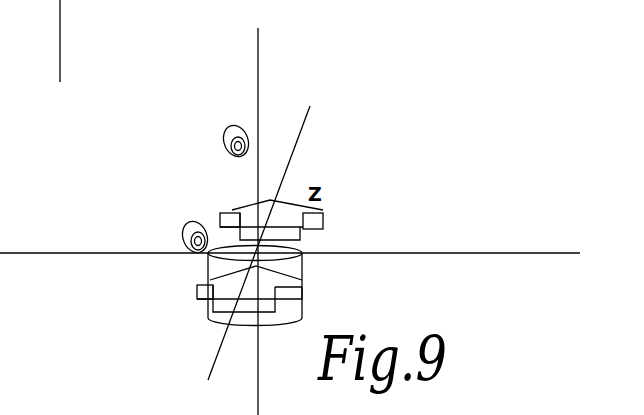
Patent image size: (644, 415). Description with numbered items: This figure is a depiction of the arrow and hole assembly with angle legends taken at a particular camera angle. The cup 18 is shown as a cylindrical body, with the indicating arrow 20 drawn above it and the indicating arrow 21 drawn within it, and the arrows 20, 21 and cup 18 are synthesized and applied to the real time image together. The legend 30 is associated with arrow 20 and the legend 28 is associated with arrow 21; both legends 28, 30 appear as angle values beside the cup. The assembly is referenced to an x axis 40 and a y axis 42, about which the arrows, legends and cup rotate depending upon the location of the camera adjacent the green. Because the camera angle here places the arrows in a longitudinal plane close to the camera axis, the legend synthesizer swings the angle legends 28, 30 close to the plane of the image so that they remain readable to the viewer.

The cup 18 is at (305, 270).
The indicating arrow 20 is at (325, 218).
The indicating arrow 21 is at (257, 240).
The legend 28 is at (112, 292).
The legend 30 is at (158, 162).
The x axis 40 is at (543, 253).
The y axis 42 is at (258, 68).